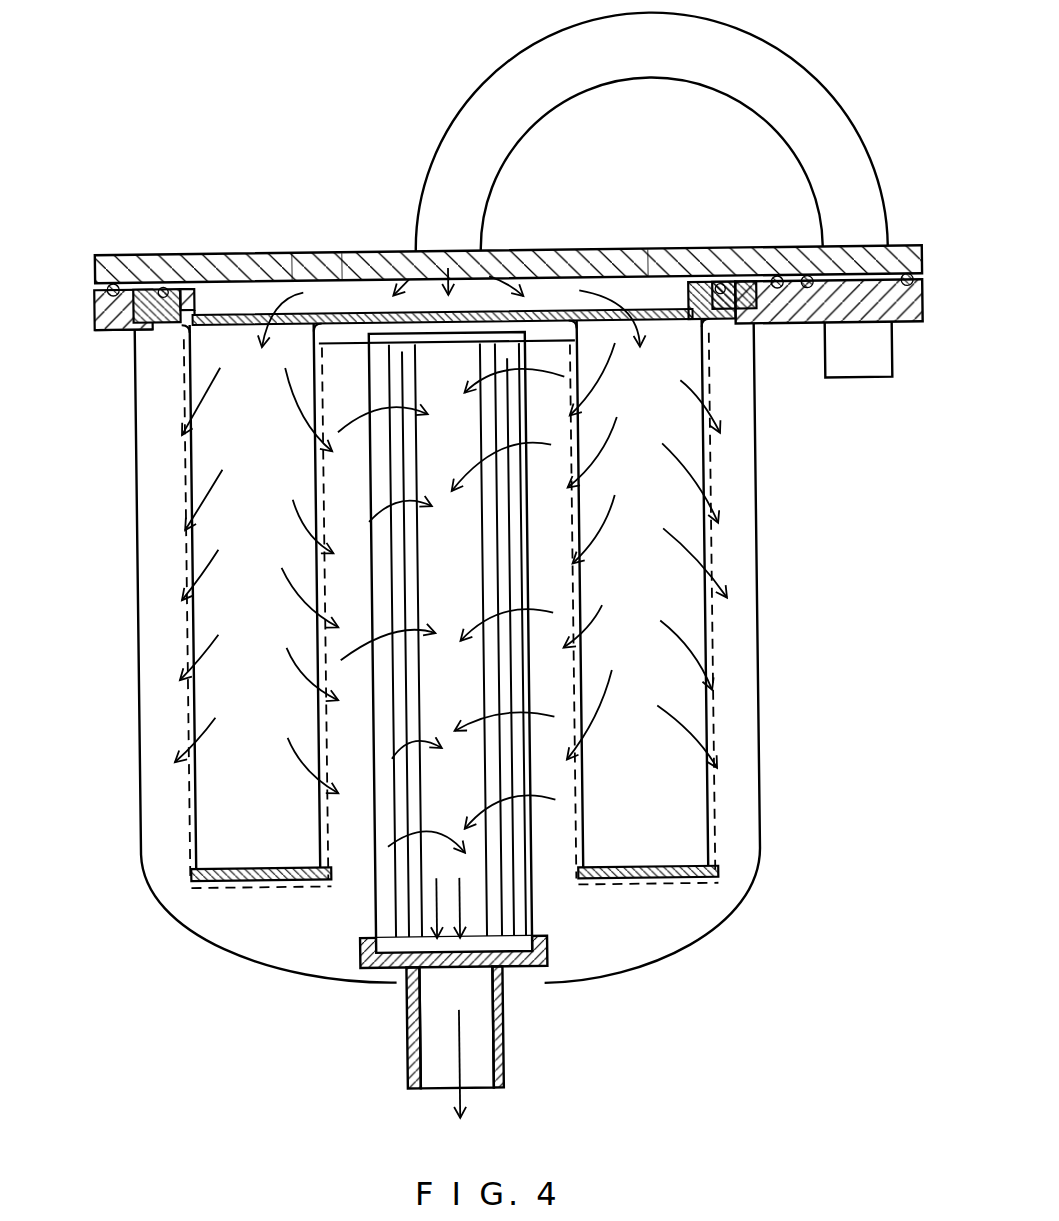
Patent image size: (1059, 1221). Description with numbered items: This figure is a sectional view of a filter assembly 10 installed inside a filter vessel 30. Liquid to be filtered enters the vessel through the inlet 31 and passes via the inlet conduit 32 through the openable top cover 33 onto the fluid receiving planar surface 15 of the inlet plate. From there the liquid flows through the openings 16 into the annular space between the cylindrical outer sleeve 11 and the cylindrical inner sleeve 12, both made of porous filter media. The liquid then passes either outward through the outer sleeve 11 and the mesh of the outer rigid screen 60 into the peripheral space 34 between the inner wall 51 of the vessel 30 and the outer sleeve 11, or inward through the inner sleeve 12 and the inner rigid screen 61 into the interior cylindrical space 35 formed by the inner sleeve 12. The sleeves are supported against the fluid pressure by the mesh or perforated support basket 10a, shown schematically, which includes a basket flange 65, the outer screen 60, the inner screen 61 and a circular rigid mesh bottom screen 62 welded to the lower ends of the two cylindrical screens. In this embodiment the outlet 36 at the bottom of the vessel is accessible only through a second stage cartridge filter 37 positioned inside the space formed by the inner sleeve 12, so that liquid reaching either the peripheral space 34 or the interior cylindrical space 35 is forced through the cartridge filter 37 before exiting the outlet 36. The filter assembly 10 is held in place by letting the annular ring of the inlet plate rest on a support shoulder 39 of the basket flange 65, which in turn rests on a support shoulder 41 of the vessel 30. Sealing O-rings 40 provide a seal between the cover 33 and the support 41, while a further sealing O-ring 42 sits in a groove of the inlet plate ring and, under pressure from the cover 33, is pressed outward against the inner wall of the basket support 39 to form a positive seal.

The filter assembly 10 is at (634, 898).
The support basket 10a is at (185, 645).
The outer sleeve 11 is at (195, 790).
The inner sleeve 12 is at (312, 832).
The fluid receiving planar surface 15 is at (363, 310).
The openings 16 is at (296, 248).
The filter vessel 30 is at (118, 491).
The inlet 31 is at (868, 382).
The inlet conduit 32 is at (824, 100).
The top cover 33 is at (263, 248).
The peripheral space 34 is at (146, 723).
The interior cylindrical space 35 is at (338, 737).
The outlet 36 is at (410, 1037).
The second stage cartridge filter 37 is at (380, 883).
The support shoulder 39 is at (168, 326).
The sealing O-rings 40 is at (119, 280).
The support shoulder 41 is at (104, 285).
The sealing O-ring 42 is at (167, 288).
The inner wall 51 is at (140, 596).
The outer rigid mesh cylindrical screen 60 is at (187, 501).
The inner rigid mesh cylindrical screen 61 is at (327, 502).
The bottom screen 62 is at (235, 884).
The basket flange 65 is at (121, 320).